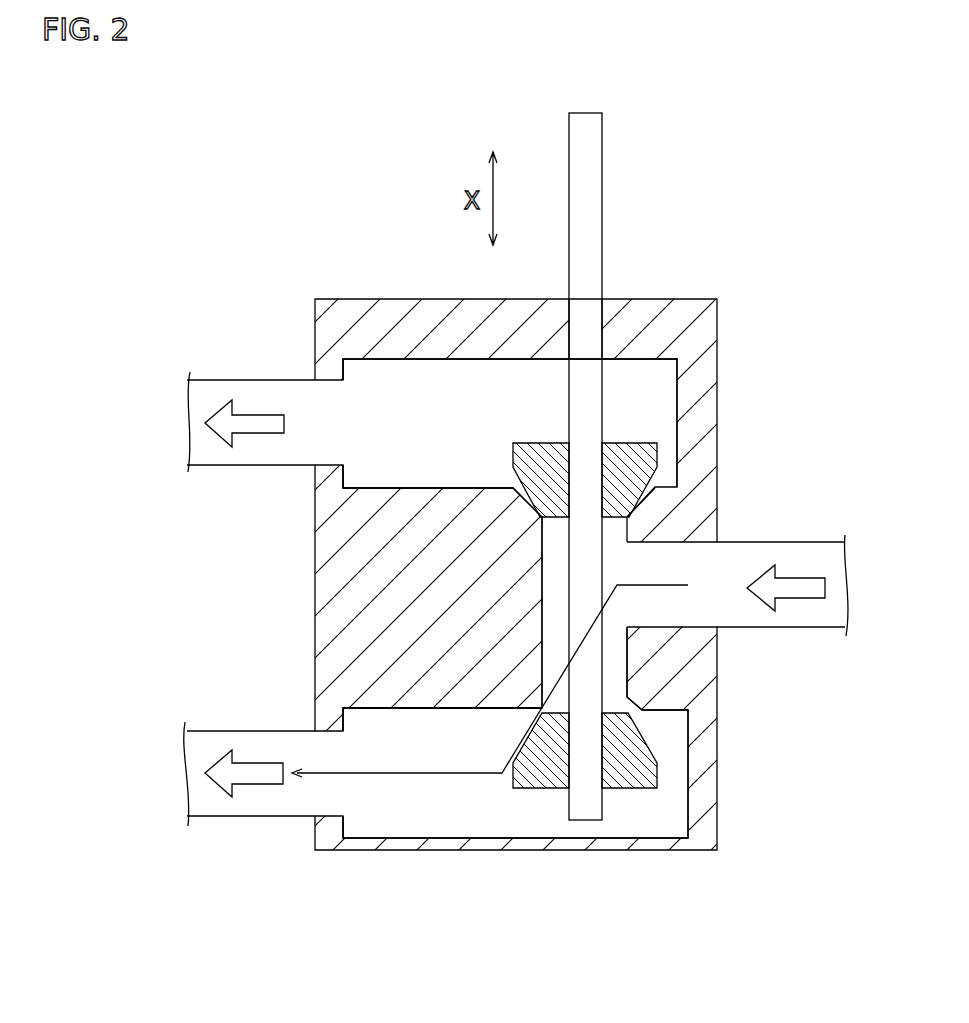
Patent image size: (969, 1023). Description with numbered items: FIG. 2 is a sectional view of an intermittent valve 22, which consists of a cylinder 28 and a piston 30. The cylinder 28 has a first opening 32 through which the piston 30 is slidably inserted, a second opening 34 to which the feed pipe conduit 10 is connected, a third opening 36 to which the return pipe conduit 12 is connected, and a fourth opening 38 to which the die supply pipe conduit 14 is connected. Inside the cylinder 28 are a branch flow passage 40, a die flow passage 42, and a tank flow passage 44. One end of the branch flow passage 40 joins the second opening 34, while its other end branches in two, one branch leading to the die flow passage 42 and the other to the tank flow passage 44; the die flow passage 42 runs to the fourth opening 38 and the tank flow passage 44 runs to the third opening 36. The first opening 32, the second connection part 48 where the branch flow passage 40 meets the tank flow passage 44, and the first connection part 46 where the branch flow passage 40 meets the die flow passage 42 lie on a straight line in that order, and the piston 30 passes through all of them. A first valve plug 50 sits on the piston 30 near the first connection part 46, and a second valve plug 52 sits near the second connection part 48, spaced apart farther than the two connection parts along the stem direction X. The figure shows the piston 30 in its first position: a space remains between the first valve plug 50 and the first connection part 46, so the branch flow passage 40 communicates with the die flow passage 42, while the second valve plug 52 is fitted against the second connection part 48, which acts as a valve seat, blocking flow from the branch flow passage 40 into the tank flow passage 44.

The feed pipe conduit 10 is at (797, 627).
The return pipe conduit 12 is at (226, 380).
The die supply pipe conduit 14 is at (237, 817).
The intermittent valve 22 is at (534, 973).
The cylinder 28 is at (720, 833).
The piston 30 is at (603, 173).
The first opening 32 is at (605, 327).
The second opening 34 is at (707, 627).
The third opening 36 is at (332, 380).
The fourth opening 38 is at (333, 817).
The branch flow passage 40 is at (680, 556).
The die flow passage 42 is at (432, 813).
The tank flow passage 44 is at (418, 421).
The first connection part 46 is at (650, 690).
The second connection part 48 is at (535, 500).
The first valve plug 50 is at (633, 788).
The second valve plug 52 is at (533, 443).